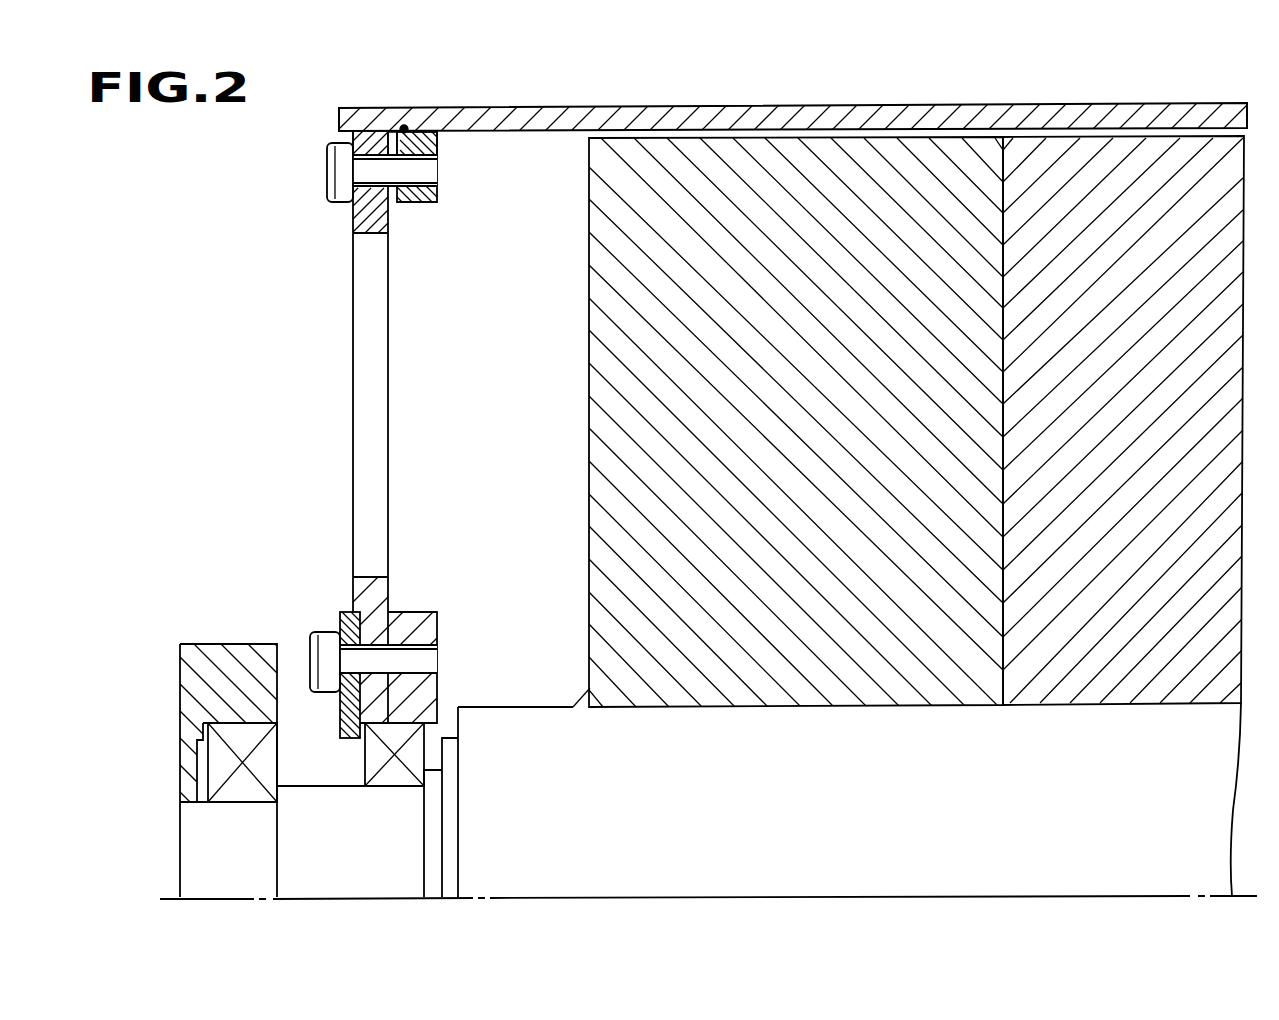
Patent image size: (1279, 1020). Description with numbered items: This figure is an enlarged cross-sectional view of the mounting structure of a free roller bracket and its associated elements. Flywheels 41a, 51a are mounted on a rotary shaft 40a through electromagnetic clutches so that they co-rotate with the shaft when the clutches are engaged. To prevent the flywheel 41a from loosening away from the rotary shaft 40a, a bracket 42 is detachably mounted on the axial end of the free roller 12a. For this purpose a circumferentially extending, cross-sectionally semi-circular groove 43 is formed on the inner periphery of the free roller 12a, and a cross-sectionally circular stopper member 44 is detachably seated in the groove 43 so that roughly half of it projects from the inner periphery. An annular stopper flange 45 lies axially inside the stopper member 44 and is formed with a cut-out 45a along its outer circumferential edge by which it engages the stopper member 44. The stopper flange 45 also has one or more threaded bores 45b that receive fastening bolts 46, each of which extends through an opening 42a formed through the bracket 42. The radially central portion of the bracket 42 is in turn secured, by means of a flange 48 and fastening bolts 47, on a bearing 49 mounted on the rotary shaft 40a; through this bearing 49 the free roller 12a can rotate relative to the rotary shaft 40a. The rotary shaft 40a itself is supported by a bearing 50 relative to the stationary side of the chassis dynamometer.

The free roller 12a is at (945, 113).
The rotary shaft 40a is at (555, 775).
The flywheel 41a is at (1147, 663).
The flywheel 51a is at (862, 648).
The bracket 42 is at (365, 326).
The opening 42a is at (350, 167).
The groove 43 is at (412, 127).
The stopper member 44 is at (437, 146).
The stopper flange 45 is at (423, 202).
The cut-out 45a is at (392, 133).
The threaded bore 45b is at (437, 168).
The fastening bolt 46 is at (338, 207).
The fastening bolt 47 is at (327, 632).
The flange 48 is at (347, 736).
The bearing 49 is at (413, 750).
The bearing 50 is at (265, 768).